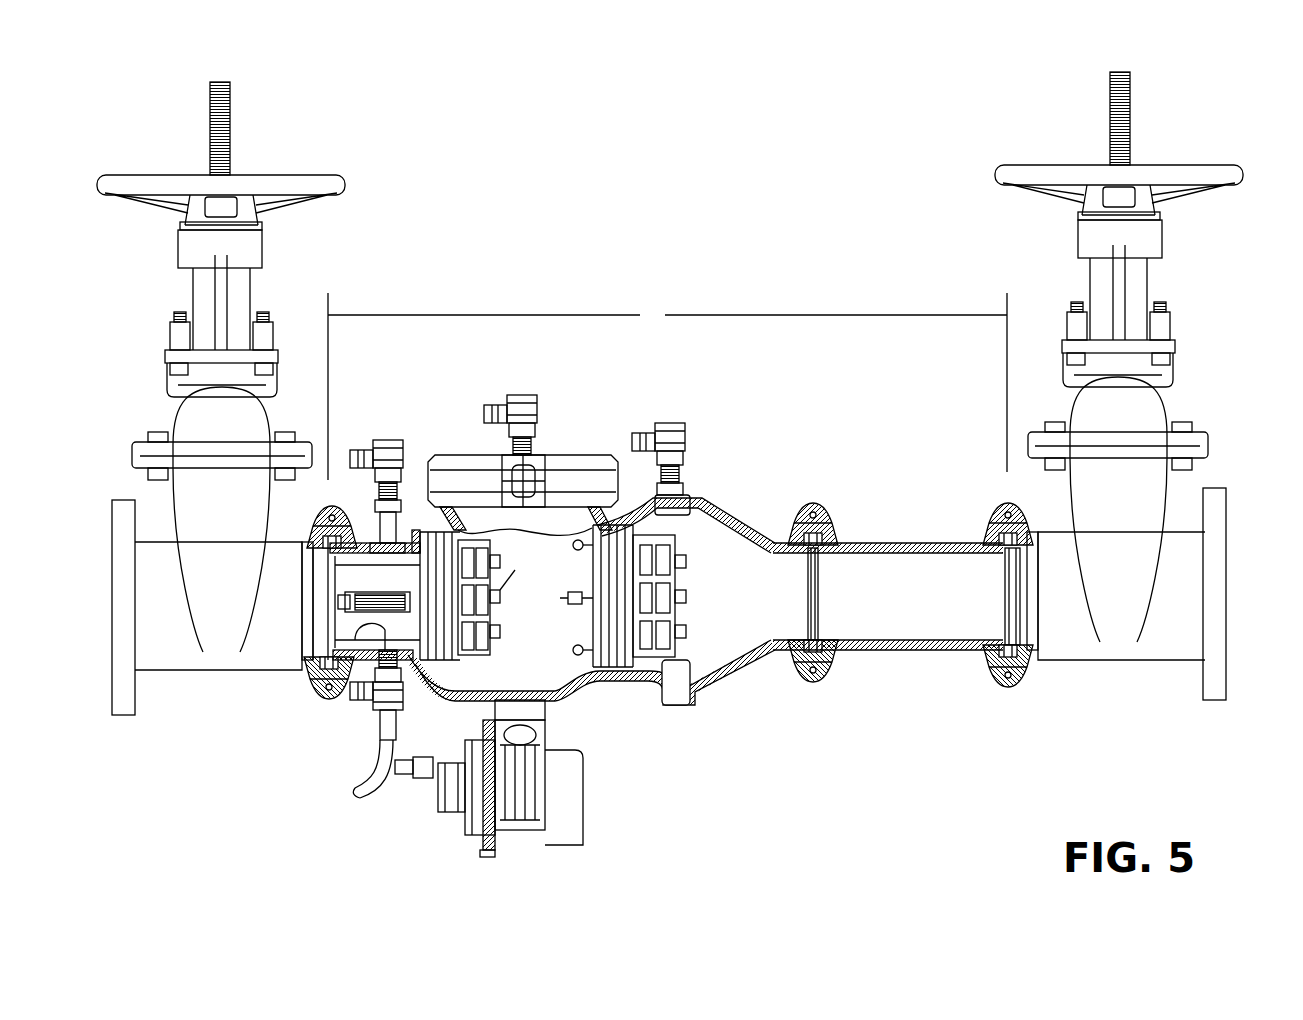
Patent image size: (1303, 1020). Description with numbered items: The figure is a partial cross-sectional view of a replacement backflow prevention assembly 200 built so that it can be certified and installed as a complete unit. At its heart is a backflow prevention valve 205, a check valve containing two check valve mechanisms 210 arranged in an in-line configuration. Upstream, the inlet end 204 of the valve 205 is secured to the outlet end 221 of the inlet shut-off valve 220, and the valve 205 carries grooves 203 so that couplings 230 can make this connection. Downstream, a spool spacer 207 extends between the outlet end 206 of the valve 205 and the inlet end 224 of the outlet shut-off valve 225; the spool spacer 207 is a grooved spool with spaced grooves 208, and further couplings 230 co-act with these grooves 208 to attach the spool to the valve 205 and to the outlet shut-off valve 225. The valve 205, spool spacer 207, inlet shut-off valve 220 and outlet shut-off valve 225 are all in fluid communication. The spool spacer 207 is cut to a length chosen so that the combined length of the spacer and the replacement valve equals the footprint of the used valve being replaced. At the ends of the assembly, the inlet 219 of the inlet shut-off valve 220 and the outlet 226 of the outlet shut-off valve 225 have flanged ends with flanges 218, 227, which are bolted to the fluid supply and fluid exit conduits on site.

The backflow prevention assembly 200 is at (782, 210).
The grooves 203 is at (352, 543).
The inlet end 204 is at (335, 505).
The backflow prevention valve 205 is at (575, 440).
The outlet end 206 is at (768, 520).
The spool spacer 207 is at (918, 527).
The grooves 208 is at (850, 530).
The check valve mechanisms 210 is at (513, 625).
The flange 218 is at (120, 495).
The inlet 219 is at (102, 684).
The inlet shut-off valve 220 is at (150, 305).
The outlet end 221 is at (288, 680).
The inlet end 224 is at (1042, 502).
The outlet shut-off valve 225 is at (1172, 240).
The outlet 226 is at (1242, 665).
The flange 227 is at (1218, 485).
The couplings 230 is at (328, 715).